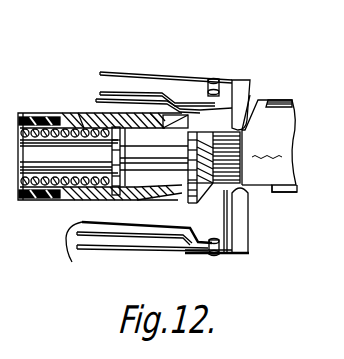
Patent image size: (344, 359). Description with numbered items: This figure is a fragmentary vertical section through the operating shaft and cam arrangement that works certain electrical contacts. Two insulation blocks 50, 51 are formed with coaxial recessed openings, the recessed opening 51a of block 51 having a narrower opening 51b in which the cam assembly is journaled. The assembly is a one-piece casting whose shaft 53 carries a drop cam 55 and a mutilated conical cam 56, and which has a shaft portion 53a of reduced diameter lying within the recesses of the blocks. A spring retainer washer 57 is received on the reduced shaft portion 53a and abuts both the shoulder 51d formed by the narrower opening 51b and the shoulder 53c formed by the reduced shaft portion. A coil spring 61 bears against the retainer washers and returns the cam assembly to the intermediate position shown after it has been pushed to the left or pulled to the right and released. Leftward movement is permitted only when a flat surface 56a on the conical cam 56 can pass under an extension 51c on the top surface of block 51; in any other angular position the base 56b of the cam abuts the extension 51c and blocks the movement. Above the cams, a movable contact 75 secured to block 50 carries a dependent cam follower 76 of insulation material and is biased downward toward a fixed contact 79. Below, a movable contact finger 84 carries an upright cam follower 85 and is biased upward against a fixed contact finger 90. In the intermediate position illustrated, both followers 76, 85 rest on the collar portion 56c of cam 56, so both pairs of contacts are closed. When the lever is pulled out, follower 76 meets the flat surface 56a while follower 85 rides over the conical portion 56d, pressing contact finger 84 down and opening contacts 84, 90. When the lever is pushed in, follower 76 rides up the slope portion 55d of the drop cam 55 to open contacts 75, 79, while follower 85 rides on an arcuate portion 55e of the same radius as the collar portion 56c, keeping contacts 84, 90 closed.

The block 50 is at (34, 114).
The block 51 is at (70, 113).
The recessed opening 51a is at (62, 201).
The narrower opening 51b is at (158, 110).
The extension 51c is at (182, 119).
The shoulder 51d is at (82, 113).
The shaft 53 is at (150, 196).
The shaft portion of reduced diameter 53a is at (57, 113).
The shoulder 53c is at (90, 202).
The drop cam 55 is at (269, 146).
The slope portion 55d is at (291, 99).
The arcuate portion 55e is at (258, 190).
The mutilated conical cam 56 is at (242, 200).
The flat surface 56a is at (249, 110).
The base 56b is at (179, 249).
The collar portion 56c is at (245, 126).
The conical portion 56d is at (218, 186).
The spring retainer washer 57 is at (118, 110).
The coil spring 61 is at (28, 199).
The movable contact 75 is at (163, 110).
The cam follower 76 is at (240, 91).
The fixed contact 79 is at (206, 80).
The movable contact finger 84 is at (132, 251).
The cam follower 85 is at (248, 250).
The fixed contact finger 90 is at (81, 254).